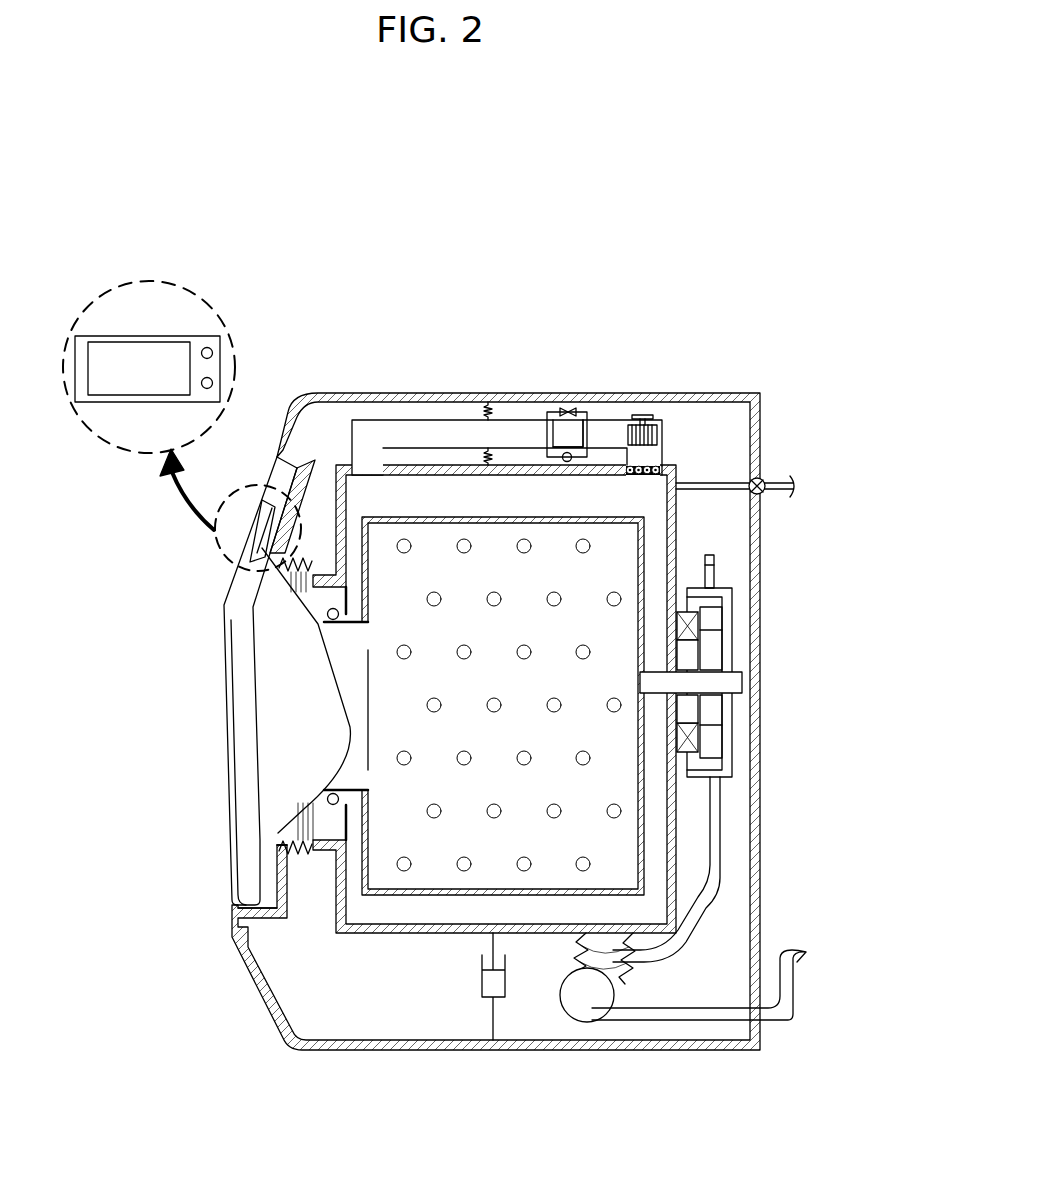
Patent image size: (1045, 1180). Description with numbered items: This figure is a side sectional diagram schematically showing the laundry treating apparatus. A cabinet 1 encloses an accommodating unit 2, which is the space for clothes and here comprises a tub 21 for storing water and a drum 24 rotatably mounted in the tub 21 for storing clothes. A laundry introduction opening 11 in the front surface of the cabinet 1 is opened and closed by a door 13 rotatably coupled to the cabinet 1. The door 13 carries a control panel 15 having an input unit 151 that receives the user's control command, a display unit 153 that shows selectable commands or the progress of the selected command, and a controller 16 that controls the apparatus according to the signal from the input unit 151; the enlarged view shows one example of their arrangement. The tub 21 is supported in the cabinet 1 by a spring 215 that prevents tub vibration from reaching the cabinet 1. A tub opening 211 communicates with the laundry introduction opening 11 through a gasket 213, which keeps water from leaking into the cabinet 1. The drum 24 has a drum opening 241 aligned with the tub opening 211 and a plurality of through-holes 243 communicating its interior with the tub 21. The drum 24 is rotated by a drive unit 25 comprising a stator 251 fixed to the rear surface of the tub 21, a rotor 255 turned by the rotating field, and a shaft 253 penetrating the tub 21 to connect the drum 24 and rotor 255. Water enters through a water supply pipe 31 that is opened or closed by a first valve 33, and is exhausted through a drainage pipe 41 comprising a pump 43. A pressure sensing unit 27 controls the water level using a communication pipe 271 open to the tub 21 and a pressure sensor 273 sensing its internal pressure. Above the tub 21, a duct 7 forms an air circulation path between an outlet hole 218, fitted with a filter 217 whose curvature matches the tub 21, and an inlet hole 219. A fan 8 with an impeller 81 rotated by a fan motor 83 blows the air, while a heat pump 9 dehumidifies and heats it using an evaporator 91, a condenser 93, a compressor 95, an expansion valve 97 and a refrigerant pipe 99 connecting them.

The cabinet 1 is at (321, 393).
The accommodating unit 2 is at (443, 327).
The duct 7 is at (370, 420).
The fan 8 is at (705, 327).
The impeller 81 is at (657, 435).
The fan motor 83 is at (643, 414).
The heat pump 9 is at (633, 327).
The evaporator 91 is at (585, 447).
The condenser 93 is at (556, 420).
The compressor 95 is at (547, 432).
The expansion valve 97 is at (568, 407).
The refrigerant pipe 99 is at (587, 430).
The laundry introduction opening 11 is at (282, 832).
The door 13 is at (251, 681).
The control panel 15 is at (264, 522).
The input unit 151 is at (213, 351).
The display unit 153 is at (152, 352).
The controller 16 is at (256, 580).
The tub 21 is at (446, 465).
The tub opening 211 is at (312, 870).
The gasket 213 is at (303, 855).
The spring 215 is at (488, 402).
The filter 217 is at (652, 476).
The outlet hole 218 is at (665, 462).
The inlet hole 219 is at (337, 493).
The drum 24 is at (470, 722).
The drum opening 241 is at (343, 642).
The through-holes 243 is at (403, 868).
The drive unit 25 is at (847, 648).
The stator 251 is at (690, 626).
The shaft 253 is at (742, 683).
The rotor 255 is at (728, 738).
The pressure sensing unit 27 is at (847, 588).
The communication pipe 271 is at (714, 580).
The pressure sensor 273 is at (715, 564).
The water supply pipe 31 is at (707, 489).
The first valve 33 is at (764, 493).
The drainage pipe 41 is at (680, 1012).
The pump 43 is at (608, 993).